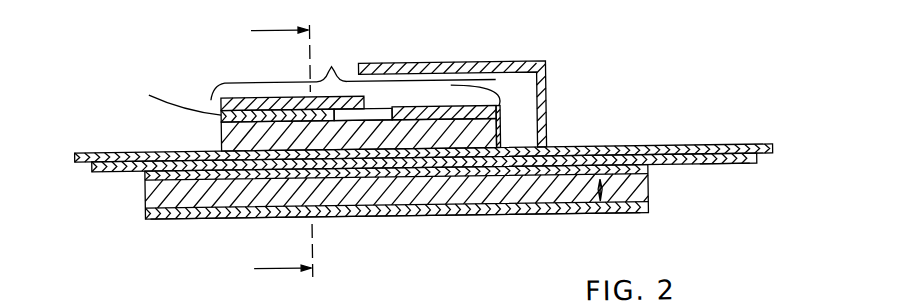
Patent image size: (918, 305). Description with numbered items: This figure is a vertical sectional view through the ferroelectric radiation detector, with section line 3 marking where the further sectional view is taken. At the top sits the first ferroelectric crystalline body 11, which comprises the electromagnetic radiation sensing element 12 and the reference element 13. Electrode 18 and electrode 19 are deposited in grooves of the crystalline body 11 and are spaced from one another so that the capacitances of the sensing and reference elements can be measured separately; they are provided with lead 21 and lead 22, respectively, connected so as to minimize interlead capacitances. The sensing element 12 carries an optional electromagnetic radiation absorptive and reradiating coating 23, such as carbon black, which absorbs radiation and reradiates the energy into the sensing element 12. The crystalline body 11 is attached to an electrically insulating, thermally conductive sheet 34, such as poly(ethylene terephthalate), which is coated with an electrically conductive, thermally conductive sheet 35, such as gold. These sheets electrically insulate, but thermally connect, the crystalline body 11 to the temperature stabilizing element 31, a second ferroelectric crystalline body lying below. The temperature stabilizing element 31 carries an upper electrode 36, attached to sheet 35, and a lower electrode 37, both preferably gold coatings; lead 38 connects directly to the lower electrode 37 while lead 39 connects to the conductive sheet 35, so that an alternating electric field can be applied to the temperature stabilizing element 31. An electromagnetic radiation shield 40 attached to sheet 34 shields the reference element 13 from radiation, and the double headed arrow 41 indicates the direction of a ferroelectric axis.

The section line 3— 3 is at (271, 151).
The first ferroelectric crystalline body 11 is at (353, 70).
The electromagnetic radiation sensing element 12 is at (222, 127).
The reference element 13 is at (500, 127).
The electrode 18 is at (237, 110).
The electrode 19 is at (410, 106).
The lead 21 is at (222, 112).
The lead 22 is at (482, 88).
The electromagnetic radiation absorptive and reradiating coating 23 is at (255, 97).
The temperature stabilizing element 31 is at (144, 196).
The electrically insulating, thermally conductive sheet 34 is at (773, 148).
The electrically conductive, thermally conductive sheet 35 is at (760, 163).
The upper electrode 36 is at (648, 170).
The lower electrode 37 is at (205, 215).
The lead 38 is at (596, 214).
The lead 39 is at (695, 170).
The electromagnetic radiation shield 40 is at (443, 63).
The double headed arrow 41 is at (603, 198).